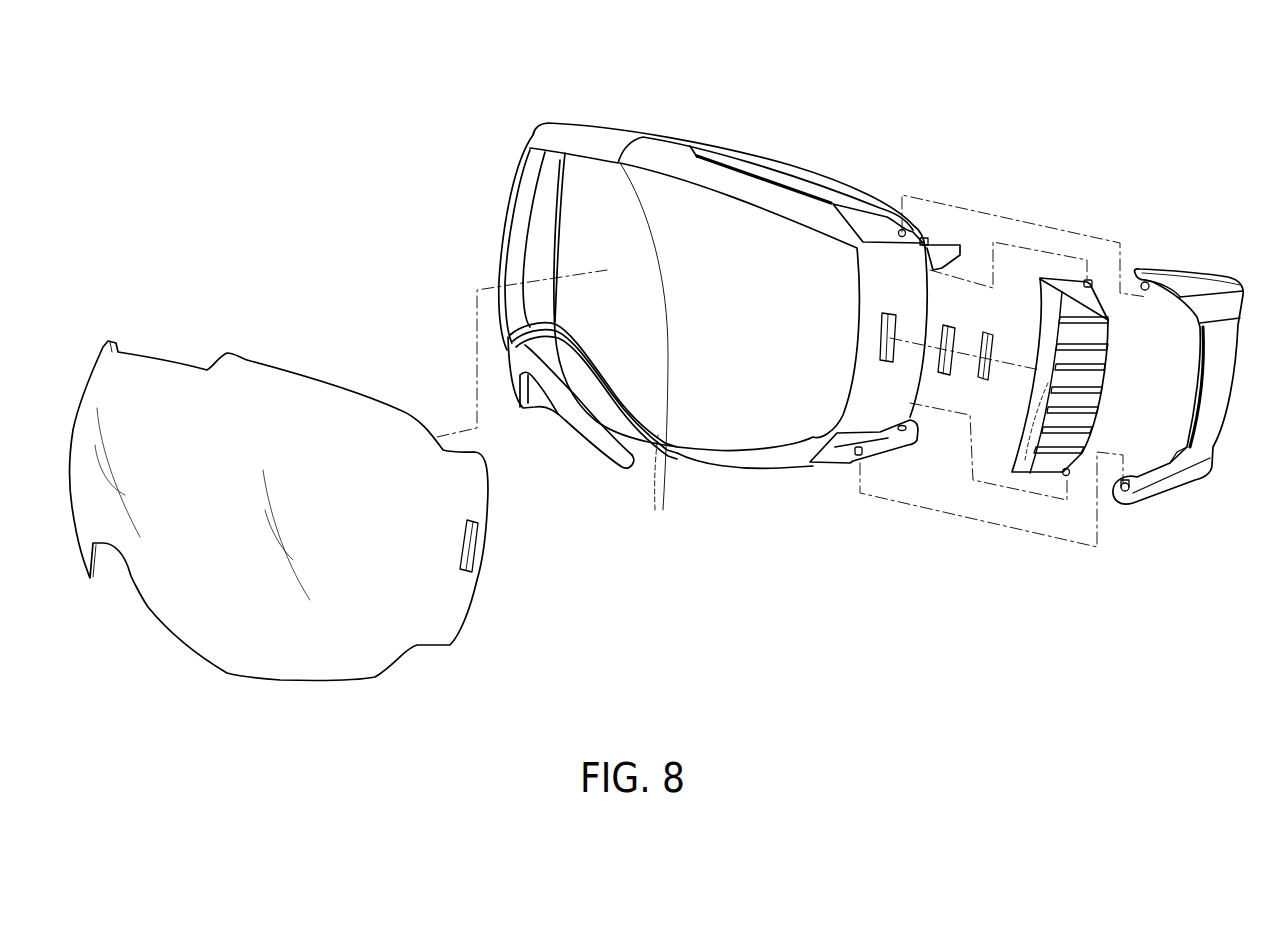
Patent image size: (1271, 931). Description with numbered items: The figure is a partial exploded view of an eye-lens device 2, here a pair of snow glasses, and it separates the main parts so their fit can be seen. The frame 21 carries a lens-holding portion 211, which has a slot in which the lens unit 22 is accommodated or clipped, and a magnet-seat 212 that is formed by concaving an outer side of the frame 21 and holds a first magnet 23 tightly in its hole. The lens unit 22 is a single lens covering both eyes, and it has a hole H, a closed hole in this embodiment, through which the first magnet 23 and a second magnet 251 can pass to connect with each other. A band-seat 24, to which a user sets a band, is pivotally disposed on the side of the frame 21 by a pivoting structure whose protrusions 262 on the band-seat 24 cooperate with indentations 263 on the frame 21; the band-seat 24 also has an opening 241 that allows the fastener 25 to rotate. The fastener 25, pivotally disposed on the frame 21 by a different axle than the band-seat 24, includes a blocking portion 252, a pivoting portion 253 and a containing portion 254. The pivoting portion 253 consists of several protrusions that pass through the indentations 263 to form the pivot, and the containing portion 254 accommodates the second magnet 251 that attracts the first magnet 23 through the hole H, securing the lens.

The eye-lens device 2 is at (206, 123).
The frame 21 is at (596, 126).
The lens-holding portion 211 is at (707, 359).
The magnet-seat 212 is at (883, 325).
The lens unit 22 is at (210, 657).
The first magnet 23 is at (952, 325).
The band-seat 24 is at (1185, 480).
The opening 241 is at (1190, 320).
The fastener 25 is at (1055, 280).
The second magnet 251 is at (988, 333).
The blocking portion 252 is at (1095, 378).
The pivoting portion 253 is at (1088, 280).
The containing portion 254 is at (1018, 400).
The protrusion 262 is at (1147, 282).
The indentation 263 is at (905, 236).
The hole H is at (483, 552).